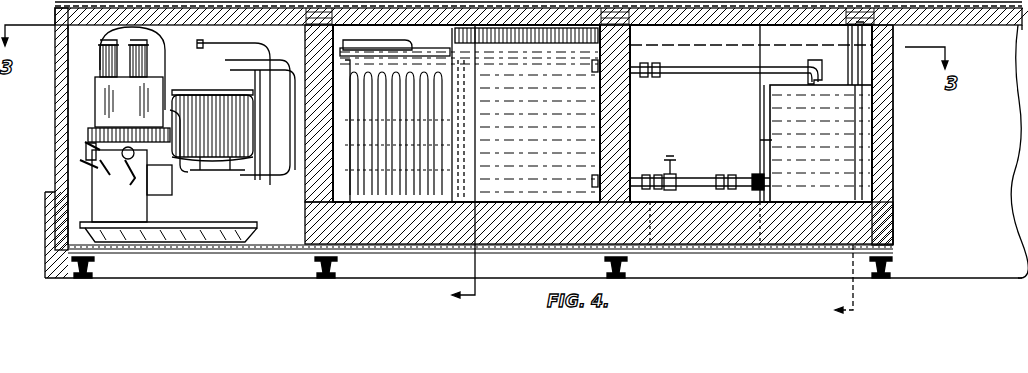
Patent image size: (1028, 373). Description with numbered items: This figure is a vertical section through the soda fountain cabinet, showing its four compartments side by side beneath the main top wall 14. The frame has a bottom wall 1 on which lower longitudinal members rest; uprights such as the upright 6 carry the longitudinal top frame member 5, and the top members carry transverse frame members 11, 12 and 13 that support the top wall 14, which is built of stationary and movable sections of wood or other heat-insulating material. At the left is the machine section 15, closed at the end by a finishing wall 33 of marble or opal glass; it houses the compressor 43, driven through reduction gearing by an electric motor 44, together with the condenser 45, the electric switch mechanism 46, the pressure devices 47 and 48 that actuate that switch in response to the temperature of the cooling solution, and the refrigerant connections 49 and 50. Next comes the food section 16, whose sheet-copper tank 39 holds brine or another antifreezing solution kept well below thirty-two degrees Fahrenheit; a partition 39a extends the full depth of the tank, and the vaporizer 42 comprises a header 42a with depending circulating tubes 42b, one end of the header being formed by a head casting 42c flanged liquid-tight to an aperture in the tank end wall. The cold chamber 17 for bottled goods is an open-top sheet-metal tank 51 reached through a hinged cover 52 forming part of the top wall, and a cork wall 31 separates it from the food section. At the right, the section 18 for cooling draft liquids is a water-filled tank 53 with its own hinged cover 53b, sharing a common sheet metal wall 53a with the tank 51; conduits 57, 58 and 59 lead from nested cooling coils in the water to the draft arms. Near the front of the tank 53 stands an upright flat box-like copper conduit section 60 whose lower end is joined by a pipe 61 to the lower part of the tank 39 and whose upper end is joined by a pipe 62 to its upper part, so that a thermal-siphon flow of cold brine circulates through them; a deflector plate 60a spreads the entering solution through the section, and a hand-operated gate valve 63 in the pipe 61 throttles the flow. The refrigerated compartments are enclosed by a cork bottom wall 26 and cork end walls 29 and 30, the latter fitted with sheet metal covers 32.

The bottom wall 1 is at (332, 265).
The longitudinal top frame member 5 is at (466, 173).
The upright 6 is at (751, 172).
The transverse frame member 11 is at (636, 28).
The transverse frame member 12 is at (752, 27).
The transverse frame member 13 is at (935, 26).
The main top wall 14 is at (528, 33).
The machine section 15 is at (256, 241).
The food section 16 is at (428, 205).
The cold chamber 17 is at (650, 254).
The section for cooling liquids on draft 18 is at (762, 254).
The bottom wall 26 is at (525, 210).
The end wall 29 is at (318, 192).
The end wall 30 is at (888, 154).
The wall 31 is at (632, 114).
The sheet metal cover 32 is at (310, 222).
The finishing wall 33 is at (58, 122).
The tank 39 is at (562, 200).
The partition 39a is at (395, 41).
The vaporizer 42 is at (404, 45).
The header 42a is at (305, 33).
The circulating tubes 42b is at (392, 205).
The head casting 42c is at (305, 47).
The compressor 43 is at (115, 187).
The electric motor 44 is at (205, 112).
The condenser 45 is at (152, 41).
The electric switch mechanism 46 is at (105, 113).
The pressure device 47 is at (98, 57).
The pressure device 48 is at (100, 69).
The refrigerant connection 49 is at (290, 166).
The refrigerant connection 50 is at (262, 173).
The tank 51 is at (712, 205).
The hinged cover 52 is at (680, 27).
The tank 53 is at (868, 180).
The common sheet metal wall 53a is at (768, 99).
The hinged cover 53b is at (760, 42).
The conduit 57 is at (884, 62).
The conduit 58 is at (852, 46).
The conduit 59 is at (856, 46).
The cooling fluid conduit section 60 is at (872, 120).
The deflector plate 60a is at (758, 162).
The pipe 61 is at (700, 177).
The pipe 62 is at (698, 72).
The gate valve 63 is at (673, 158).